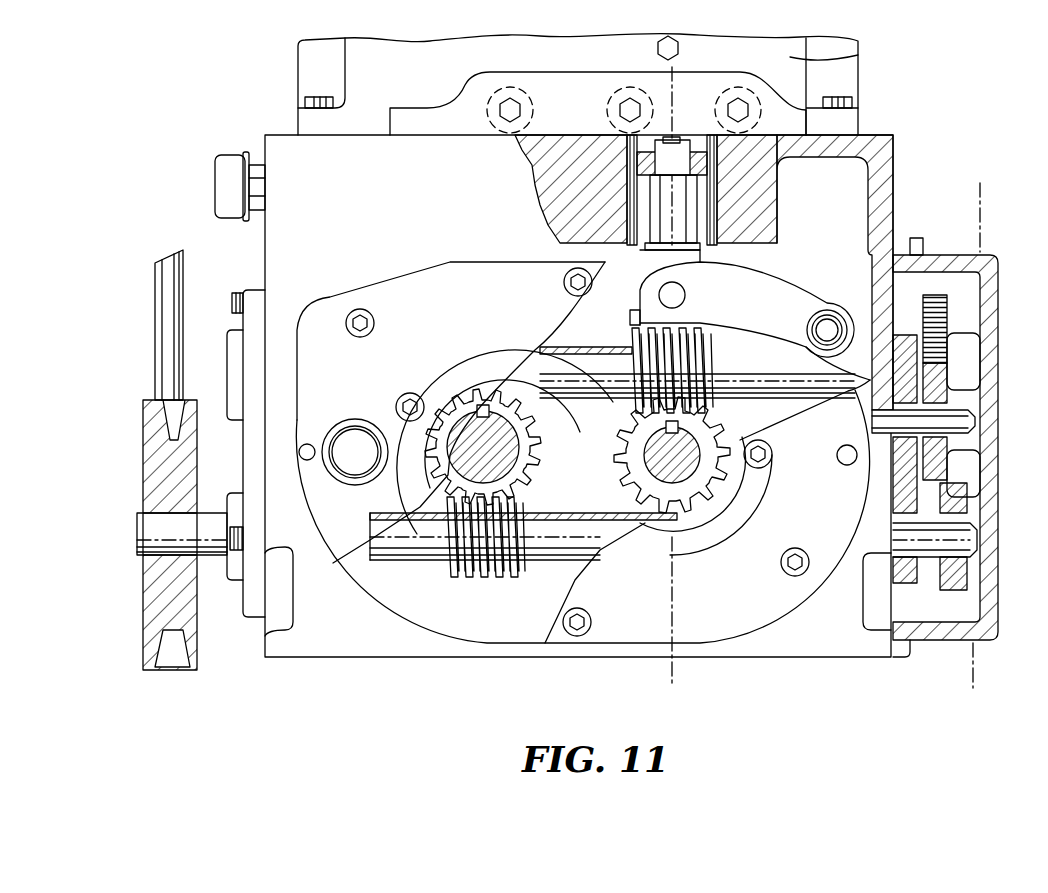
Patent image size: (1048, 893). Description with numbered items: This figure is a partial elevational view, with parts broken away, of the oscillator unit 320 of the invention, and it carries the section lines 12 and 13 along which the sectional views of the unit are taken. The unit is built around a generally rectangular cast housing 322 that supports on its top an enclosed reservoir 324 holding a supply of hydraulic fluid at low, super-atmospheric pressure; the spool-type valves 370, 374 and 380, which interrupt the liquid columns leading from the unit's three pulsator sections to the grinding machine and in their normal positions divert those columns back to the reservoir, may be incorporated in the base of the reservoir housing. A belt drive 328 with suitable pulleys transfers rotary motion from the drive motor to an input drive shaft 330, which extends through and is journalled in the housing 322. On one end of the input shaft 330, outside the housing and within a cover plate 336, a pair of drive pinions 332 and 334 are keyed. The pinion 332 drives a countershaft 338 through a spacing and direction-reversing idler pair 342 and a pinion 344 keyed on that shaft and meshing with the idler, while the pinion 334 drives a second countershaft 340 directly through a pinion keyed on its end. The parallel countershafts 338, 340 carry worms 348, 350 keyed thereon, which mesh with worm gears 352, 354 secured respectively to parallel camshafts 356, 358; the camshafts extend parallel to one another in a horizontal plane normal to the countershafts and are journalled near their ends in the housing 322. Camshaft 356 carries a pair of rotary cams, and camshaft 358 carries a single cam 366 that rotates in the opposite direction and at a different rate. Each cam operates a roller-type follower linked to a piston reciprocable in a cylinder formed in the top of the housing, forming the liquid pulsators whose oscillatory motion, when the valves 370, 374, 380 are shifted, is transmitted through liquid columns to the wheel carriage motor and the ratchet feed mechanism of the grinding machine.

The drive assembly 320 is at (165, 153).
The cast housing 322 is at (855, 146).
The reservoir 324 is at (790, 62).
The belt drive 328 is at (165, 313).
The input drive shaft 330 is at (200, 540).
The drive pinion 332 is at (903, 578).
The drive pinion 334 is at (950, 584).
The cover plate 336 is at (986, 268).
The countershaft 338 is at (586, 362).
The countershaft 340 is at (545, 522).
The spacing and direction reversing idler pair 342 is at (930, 365).
The pinion 344 is at (937, 312).
The worm 348 is at (708, 382).
The worm 350 is at (514, 568).
The worm gear 352 is at (712, 428).
The worm gear 354 is at (542, 462).
The camshaft 356 is at (652, 446).
The camshaft 358 is at (505, 434).
The cam 366 is at (540, 375).
The three position valve 370 is at (488, 118).
The valve 374 is at (608, 122).
The three-position valve 380 is at (716, 108).
The section line 12 is at (980, 183).
The section line 13 is at (672, 67).